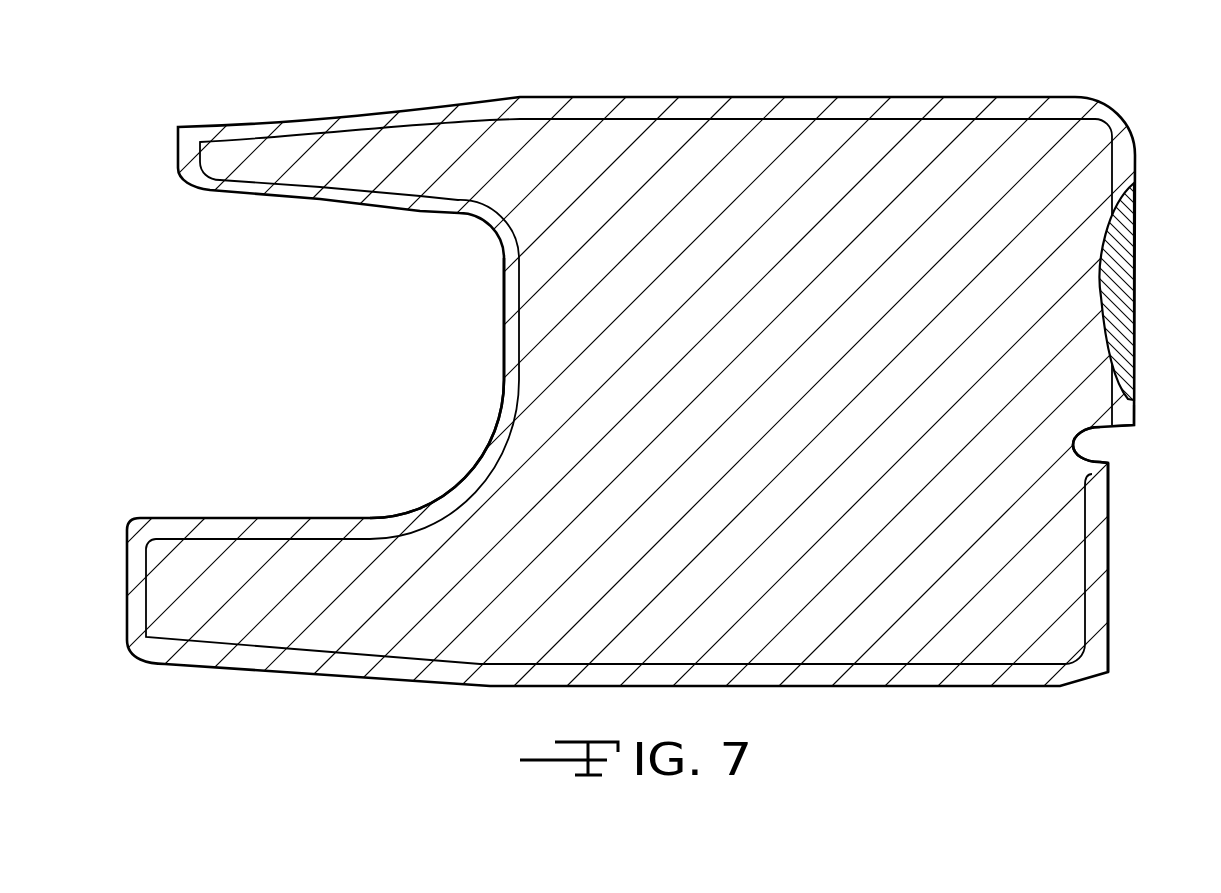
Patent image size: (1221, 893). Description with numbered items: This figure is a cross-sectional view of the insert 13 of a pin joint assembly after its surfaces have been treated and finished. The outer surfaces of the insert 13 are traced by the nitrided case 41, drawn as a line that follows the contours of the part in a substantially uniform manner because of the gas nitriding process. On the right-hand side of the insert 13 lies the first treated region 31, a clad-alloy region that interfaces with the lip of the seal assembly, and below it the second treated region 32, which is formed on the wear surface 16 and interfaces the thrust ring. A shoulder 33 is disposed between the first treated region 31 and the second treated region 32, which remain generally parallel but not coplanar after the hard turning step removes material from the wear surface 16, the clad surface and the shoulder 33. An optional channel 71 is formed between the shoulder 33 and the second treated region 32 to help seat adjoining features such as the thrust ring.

The insert 13 is at (436, 350).
The wear surface 16 is at (1136, 154).
The first treated region 31 is at (1107, 250).
The second treated region 32 is at (1143, 477).
The shoulder 33 is at (1134, 417).
The nitrided case 41 is at (908, 119).
The channel 71 is at (1100, 443).